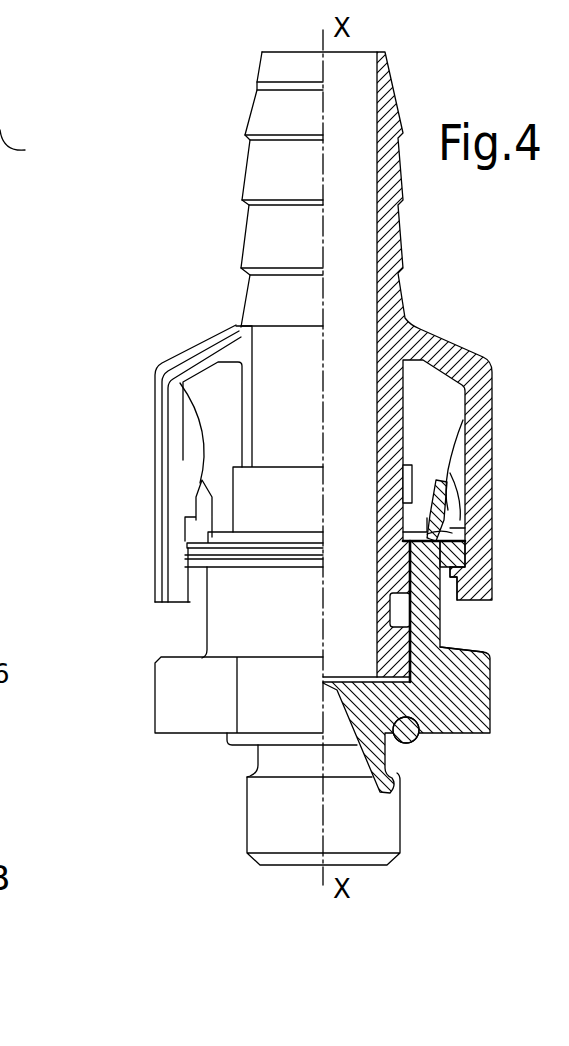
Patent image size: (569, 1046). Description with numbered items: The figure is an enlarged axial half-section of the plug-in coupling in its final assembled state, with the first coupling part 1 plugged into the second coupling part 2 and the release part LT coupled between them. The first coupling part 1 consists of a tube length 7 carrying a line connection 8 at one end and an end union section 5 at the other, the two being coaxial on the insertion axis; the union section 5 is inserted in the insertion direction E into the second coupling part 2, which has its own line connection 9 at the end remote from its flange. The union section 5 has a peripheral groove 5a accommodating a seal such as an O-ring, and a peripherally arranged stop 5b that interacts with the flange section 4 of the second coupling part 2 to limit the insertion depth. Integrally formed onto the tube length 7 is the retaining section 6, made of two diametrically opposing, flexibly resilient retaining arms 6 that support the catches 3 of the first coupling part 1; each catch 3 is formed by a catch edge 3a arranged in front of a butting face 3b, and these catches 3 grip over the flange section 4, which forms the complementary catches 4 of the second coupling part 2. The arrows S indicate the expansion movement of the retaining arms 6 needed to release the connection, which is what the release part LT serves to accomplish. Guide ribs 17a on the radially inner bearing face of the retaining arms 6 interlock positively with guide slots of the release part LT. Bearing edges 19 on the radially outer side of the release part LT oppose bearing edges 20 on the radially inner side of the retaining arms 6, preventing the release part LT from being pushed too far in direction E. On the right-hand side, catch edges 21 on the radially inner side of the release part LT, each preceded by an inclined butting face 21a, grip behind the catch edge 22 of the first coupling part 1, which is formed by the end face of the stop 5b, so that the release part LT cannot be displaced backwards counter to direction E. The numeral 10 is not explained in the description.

The first coupling part 1 is at (224, 174).
The second coupling part 2 is at (456, 762).
The catches 3 is at (212, 594).
The catch edge 3a is at (188, 590).
The butting face 3b is at (203, 606).
The catches / flange section 4 is at (185, 556).
The union section 5 is at (430, 690).
The peripheral groove 5a is at (400, 618).
The stop 5b is at (460, 580).
The retaining section / retaining arms 6 is at (202, 483).
The tube length 7 is at (392, 421).
The line connection 8 is at (386, 233).
The line connection 9 is at (258, 828).
The hose 10 is at (26, 144).
The guide ribs 17a is at (167, 430).
The bearing edges 19 is at (187, 546).
The bearing edges 20 is at (185, 520).
The catch edges 21 is at (423, 518).
The inclined face 21a is at (430, 482).
The catch edge 22 is at (410, 561).
The release part LT is at (190, 517).
The expansion movement arrows S is at (145, 531).
The insertion direction E is at (323, 802).